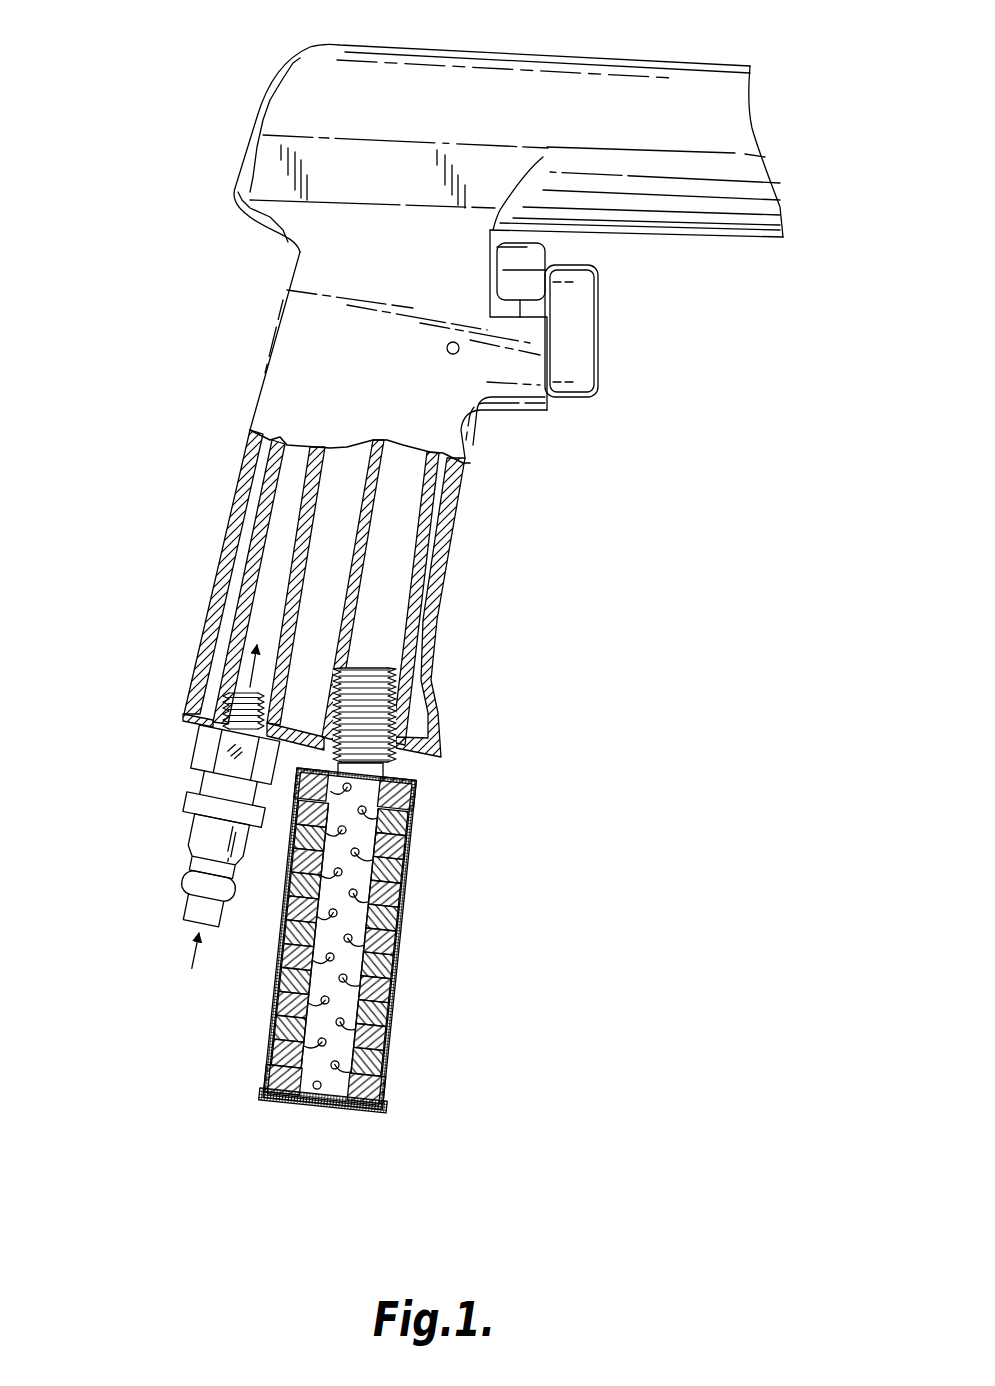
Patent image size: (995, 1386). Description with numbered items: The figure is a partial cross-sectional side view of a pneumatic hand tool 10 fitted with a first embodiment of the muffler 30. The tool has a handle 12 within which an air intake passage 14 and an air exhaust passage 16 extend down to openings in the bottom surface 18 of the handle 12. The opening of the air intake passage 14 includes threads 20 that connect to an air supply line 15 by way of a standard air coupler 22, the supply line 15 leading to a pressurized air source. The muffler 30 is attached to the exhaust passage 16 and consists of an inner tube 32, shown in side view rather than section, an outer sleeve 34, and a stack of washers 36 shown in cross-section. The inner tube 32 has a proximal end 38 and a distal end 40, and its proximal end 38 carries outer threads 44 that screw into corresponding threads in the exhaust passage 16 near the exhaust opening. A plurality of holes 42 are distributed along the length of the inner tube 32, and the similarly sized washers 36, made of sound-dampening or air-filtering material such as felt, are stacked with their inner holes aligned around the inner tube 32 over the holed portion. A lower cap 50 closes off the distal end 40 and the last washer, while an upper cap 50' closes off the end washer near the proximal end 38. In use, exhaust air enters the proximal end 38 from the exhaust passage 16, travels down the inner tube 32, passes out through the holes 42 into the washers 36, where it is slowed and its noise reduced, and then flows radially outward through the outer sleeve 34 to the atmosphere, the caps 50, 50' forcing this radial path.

The pneumatic hand tool 10 is at (185, 78).
The handle 12 is at (233, 530).
The air intake passage 14 is at (270, 587).
The air supply line 15 is at (183, 908).
The air exhaust passage 16 is at (383, 573).
The bottom surface 18 is at (412, 757).
The threads 20 is at (227, 717).
The air coupler 22 is at (190, 837).
The muffler 30 is at (478, 1103).
The inner tube 32 is at (310, 1093).
The outer sleeve 34 is at (393, 943).
The washers 36 is at (398, 888).
The proximal end 38 is at (430, 687).
The distal end 40 is at (333, 1088).
The holes 42 is at (390, 978).
The outer threads 44 is at (400, 703).
The lower cap 50 is at (260, 945).
The upper cap 50' is at (448, 947).